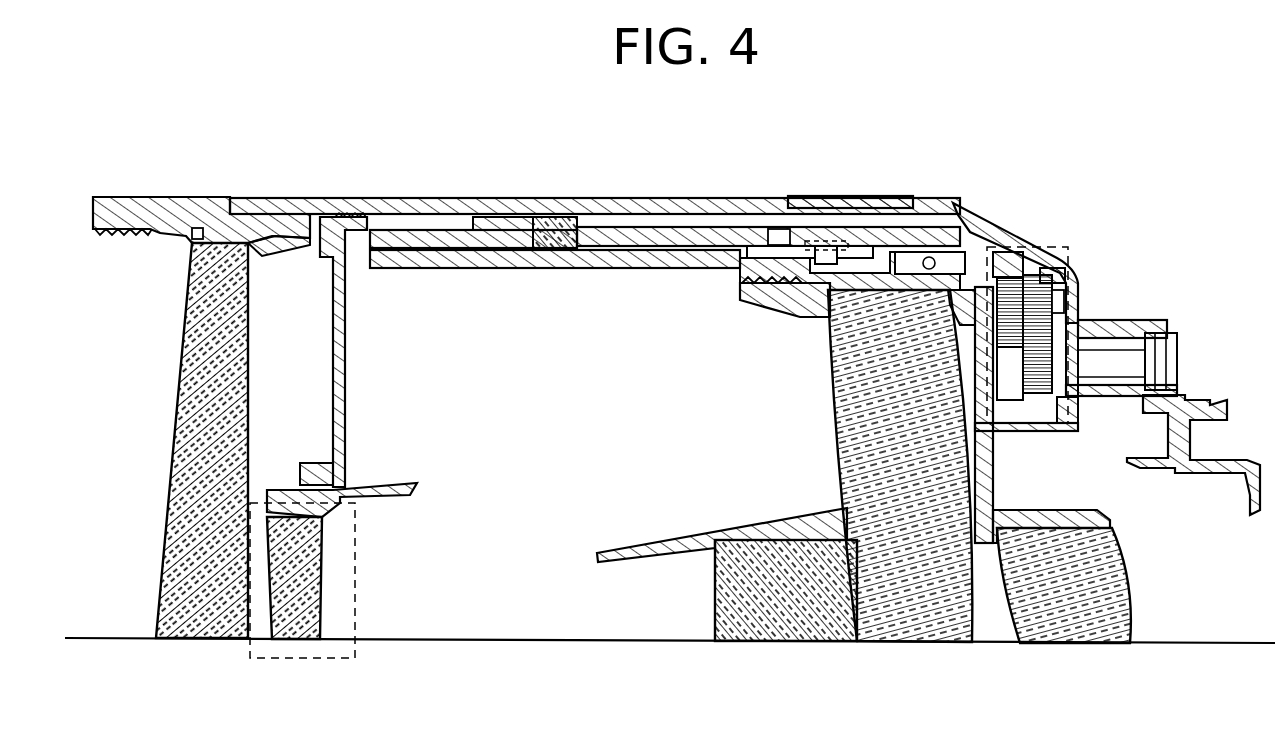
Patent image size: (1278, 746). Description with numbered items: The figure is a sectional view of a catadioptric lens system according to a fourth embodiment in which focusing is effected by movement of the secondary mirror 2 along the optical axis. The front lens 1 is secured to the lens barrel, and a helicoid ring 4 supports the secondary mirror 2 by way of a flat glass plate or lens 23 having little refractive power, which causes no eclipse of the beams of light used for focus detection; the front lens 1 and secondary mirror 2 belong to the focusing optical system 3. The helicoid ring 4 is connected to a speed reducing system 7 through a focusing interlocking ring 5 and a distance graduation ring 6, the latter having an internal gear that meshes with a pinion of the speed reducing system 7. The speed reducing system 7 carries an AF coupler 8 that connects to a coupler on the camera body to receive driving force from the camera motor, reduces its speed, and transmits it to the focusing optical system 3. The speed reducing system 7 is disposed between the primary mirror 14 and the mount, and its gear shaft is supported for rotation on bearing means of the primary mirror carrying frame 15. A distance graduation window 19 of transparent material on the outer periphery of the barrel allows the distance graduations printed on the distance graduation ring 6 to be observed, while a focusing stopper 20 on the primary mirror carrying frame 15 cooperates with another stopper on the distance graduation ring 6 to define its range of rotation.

The front lens 1 is at (213, 268).
The secondary mirror 2 is at (270, 640).
The focusing optical system 3 is at (340, 660).
The helicoid ring 4 is at (455, 237).
The focusing interlocking ring 5 is at (640, 232).
The distance graduation ring 6 is at (982, 224).
The speed reducing system 7 is at (1068, 247).
The AF coupler 8 is at (1170, 353).
The primary mirror 14 is at (978, 622).
The primary mirror carrying frame 15 is at (668, 272).
The distance graduation window 19 is at (778, 230).
The focusing stopper 20 is at (836, 245).
The flat glass plate or lens 23 is at (347, 357).